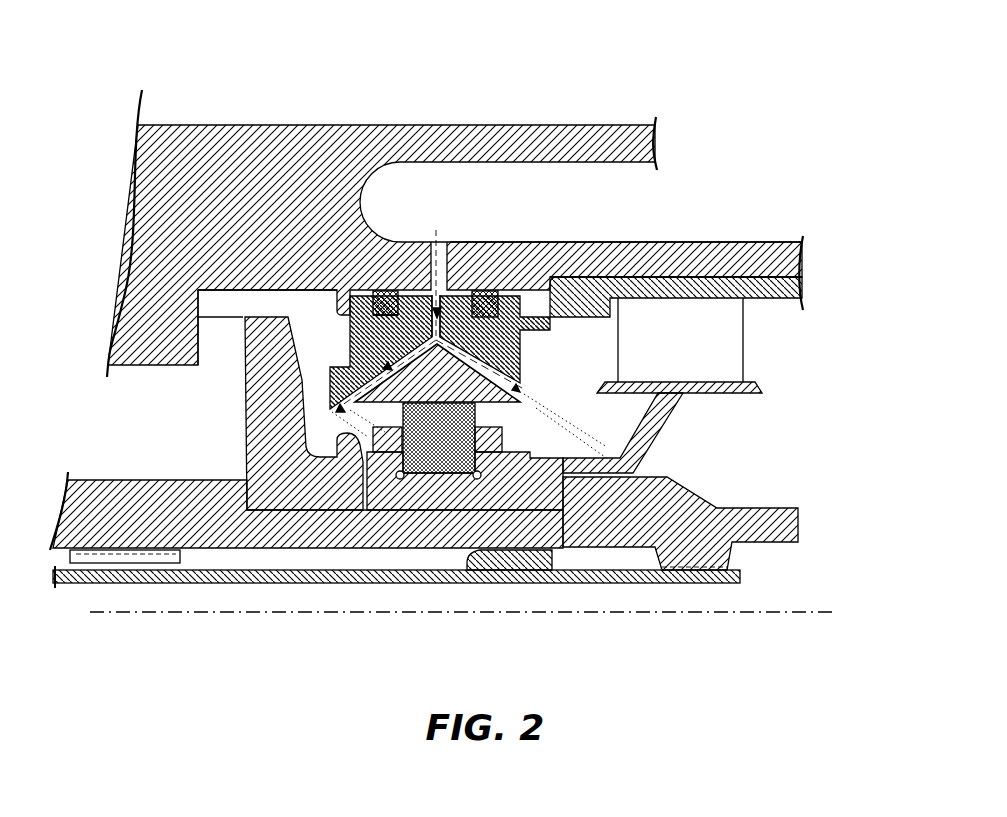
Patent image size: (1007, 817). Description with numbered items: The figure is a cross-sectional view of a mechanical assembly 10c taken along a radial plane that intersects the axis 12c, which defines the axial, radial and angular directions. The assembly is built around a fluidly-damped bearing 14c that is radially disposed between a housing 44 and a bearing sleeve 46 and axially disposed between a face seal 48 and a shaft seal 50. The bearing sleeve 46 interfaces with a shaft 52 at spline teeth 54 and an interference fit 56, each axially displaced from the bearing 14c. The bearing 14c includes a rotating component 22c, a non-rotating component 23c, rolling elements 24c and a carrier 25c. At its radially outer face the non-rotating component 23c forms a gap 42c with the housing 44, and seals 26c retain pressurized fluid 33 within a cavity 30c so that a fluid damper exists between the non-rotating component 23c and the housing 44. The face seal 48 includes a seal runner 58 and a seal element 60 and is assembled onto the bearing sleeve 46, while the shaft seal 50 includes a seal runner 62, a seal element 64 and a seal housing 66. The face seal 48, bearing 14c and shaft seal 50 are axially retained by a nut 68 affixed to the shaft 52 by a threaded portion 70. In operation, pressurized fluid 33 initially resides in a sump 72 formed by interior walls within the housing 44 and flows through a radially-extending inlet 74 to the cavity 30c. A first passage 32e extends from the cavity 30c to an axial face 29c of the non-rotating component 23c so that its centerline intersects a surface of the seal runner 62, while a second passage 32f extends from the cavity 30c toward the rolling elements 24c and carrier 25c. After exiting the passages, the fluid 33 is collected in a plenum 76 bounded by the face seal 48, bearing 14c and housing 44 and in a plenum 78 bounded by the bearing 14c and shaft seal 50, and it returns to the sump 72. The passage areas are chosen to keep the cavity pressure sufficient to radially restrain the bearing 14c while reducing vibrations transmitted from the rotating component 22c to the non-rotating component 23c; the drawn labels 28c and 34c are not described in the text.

The mechanical assembly 10c is at (806, 122).
The axis 12c is at (830, 606).
The bearing 14c is at (548, 347).
The rotating component 22c is at (387, 453).
The non-rotating component 23c is at (350, 353).
The rolling elements 24c is at (443, 473).
The carrier 25c is at (412, 492).
The seals 26c is at (375, 290).
The valve seat 28c is at (445, 290).
The axial face 29c is at (521, 384).
The cavity 30c is at (378, 293).
The first passage 32e is at (503, 371).
The second passage 32f is at (350, 412).
The pressurized fluid 33 is at (566, 200).
The sealing ring 34c is at (387, 319).
The gap 42c is at (533, 337).
The housing 44 is at (355, 123).
The bearing sleeve 46 is at (105, 480).
The face seal 48 is at (196, 420).
The shaft seal 50 is at (800, 374).
The shaft 52 is at (476, 585).
The spline teeth 54 is at (65, 555).
The interference fit 56 is at (545, 577).
The seal runner 58 is at (245, 450).
The seal element 60 is at (195, 337).
The seal runner 62 is at (660, 433).
The seal element 64 is at (680, 340).
The seal housing 66 is at (777, 300).
The nut 68 is at (700, 497).
The threaded portion 70 is at (722, 583).
The sump 72 is at (626, 257).
The inlet 74 is at (420, 290).
The plenum 76 is at (267, 303).
The plenum 78 is at (607, 413).